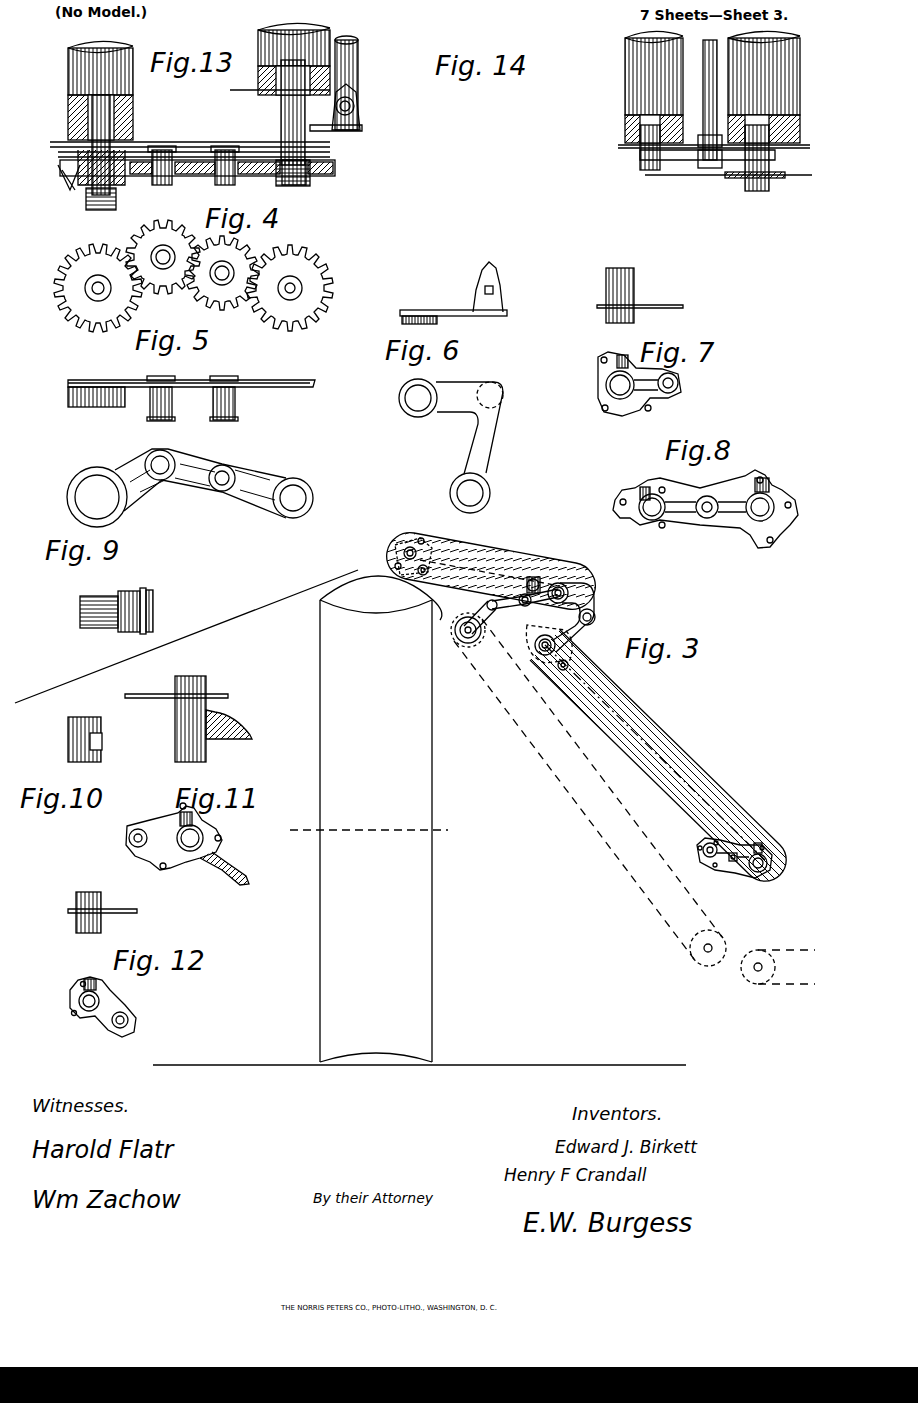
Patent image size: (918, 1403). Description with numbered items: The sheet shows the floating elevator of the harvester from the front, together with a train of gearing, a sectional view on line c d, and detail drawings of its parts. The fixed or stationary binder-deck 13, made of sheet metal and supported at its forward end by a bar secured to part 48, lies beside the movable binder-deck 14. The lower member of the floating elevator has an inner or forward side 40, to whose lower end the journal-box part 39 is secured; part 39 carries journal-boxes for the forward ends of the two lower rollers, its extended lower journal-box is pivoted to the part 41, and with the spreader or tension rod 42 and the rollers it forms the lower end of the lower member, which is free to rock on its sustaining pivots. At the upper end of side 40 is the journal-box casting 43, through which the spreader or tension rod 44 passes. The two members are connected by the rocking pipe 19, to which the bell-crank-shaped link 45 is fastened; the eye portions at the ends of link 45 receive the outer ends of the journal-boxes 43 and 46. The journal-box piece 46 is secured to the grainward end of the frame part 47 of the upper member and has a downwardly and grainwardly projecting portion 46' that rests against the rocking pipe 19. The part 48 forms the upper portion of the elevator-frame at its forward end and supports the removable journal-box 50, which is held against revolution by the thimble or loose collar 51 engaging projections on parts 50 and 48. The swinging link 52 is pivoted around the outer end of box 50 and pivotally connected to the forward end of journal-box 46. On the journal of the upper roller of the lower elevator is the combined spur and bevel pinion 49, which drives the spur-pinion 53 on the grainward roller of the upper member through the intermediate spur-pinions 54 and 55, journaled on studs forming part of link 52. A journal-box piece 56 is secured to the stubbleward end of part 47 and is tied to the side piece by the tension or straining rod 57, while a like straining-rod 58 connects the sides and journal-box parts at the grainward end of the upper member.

In FIG. 3, the fixed or stationary binder-deck 13 is at (368, 578).
In FIG. 3, the movable binder-deck 14 is at (214, 628).
In FIG. 13, the rocking pipe 19 is at (358, 60).
In FIG. 6, the rocking pipe 19 is at (505, 396).
In FIG. 3, the rocking pipe 19 is at (596, 617).
In FIG. 14, the journal-box part 39 is at (680, 162).
In FIG. 8, the journal-box part 39 is at (715, 523).
In FIG. 3, the journal-box part 39 is at (728, 875).
In FIG. 13, the inner or forward side of the lower member 40 is at (332, 145).
In FIG. 14, the inner or forward side of the lower member 40 is at (626, 148).
In FIG. 3, the inner or forward side of the lower member 40 is at (693, 760).
In FIG. 14, the pivot part 41 is at (738, 186).
In FIG. 14, the spreader or tension rod 42 is at (706, 94).
In FIG. 3, the spreader or tension rod 42 is at (760, 848).
In FIG. 7, the journal-box casting 43 is at (606, 294).
In FIG. 3, the journal-box casting 43 is at (530, 660).
In FIG. 3, the spreader or tension rod 44 is at (560, 648).
In FIG. 13, the bell-crank-shaped link 45 is at (360, 108).
In FIG. 6, the bell-crank-shaped link 45 is at (503, 290).
In FIG. 3, the bell-crank-shaped link 45 is at (585, 600).
In FIG. 13, the journal-box piece 46 is at (274, 123).
In FIG. 3, the journal-box piece 46 is at (563, 573).
In FIG. 11, the journal-box piece 46 is at (161, 773).
In FIG. 11, the downwardly and grainwardly projecting portion 46' is at (236, 794).
In FIG. 13, the frame part of the upper member 47 is at (262, 90).
In FIG. 3, the frame part of the upper member 47 is at (491, 569).
In FIG. 13, the elevator-frame upper part 48 is at (62, 145).
In FIG. 13, the combined spur and bevel pinion 49 is at (70, 170).
In FIG. 4, the combined spur and bevel pinion 49 is at (56, 284).
In FIG. 13, the removable journal-box 50 is at (92, 196).
In FIG. 10, the removable journal-box 50 is at (80, 606).
In FIG. 13, the thimble or loose collar 51 is at (80, 122).
In FIG. 10, the thimble or loose collar 51 is at (66, 738).
In FIG. 13, the swinging link 52 is at (70, 176).
In FIG. 5, the swinging link 52 is at (68, 380).
In FIG. 9, the swinging link 52 is at (122, 463).
In FIG. 3, the swinging link 52 is at (486, 620).
In FIG. 13, the spur-pinion 53 is at (320, 182).
In FIG. 4, the spur-pinion 53 is at (318, 266).
In FIG. 13, the intermediate spur-pinion 54 is at (176, 180).
In FIG. 4, the intermediate spur-pinion 54 is at (163, 266).
In FIG. 13, the intermediate spur-pinion 55 is at (244, 180).
In FIG. 4, the intermediate spur-pinion 55 is at (222, 280).
In FIG. 3, the journal-box piece 56 is at (410, 546).
In FIG. 12, the journal-box piece 56 is at (74, 903).
In FIG. 3, the tension or straining rod 57 is at (427, 567).
In FIG. 3, the straining-rod 58 is at (536, 578).
In FIG. 3, the section line point c is at (664, 845).
In FIG. 3, the section line point d is at (801, 857).